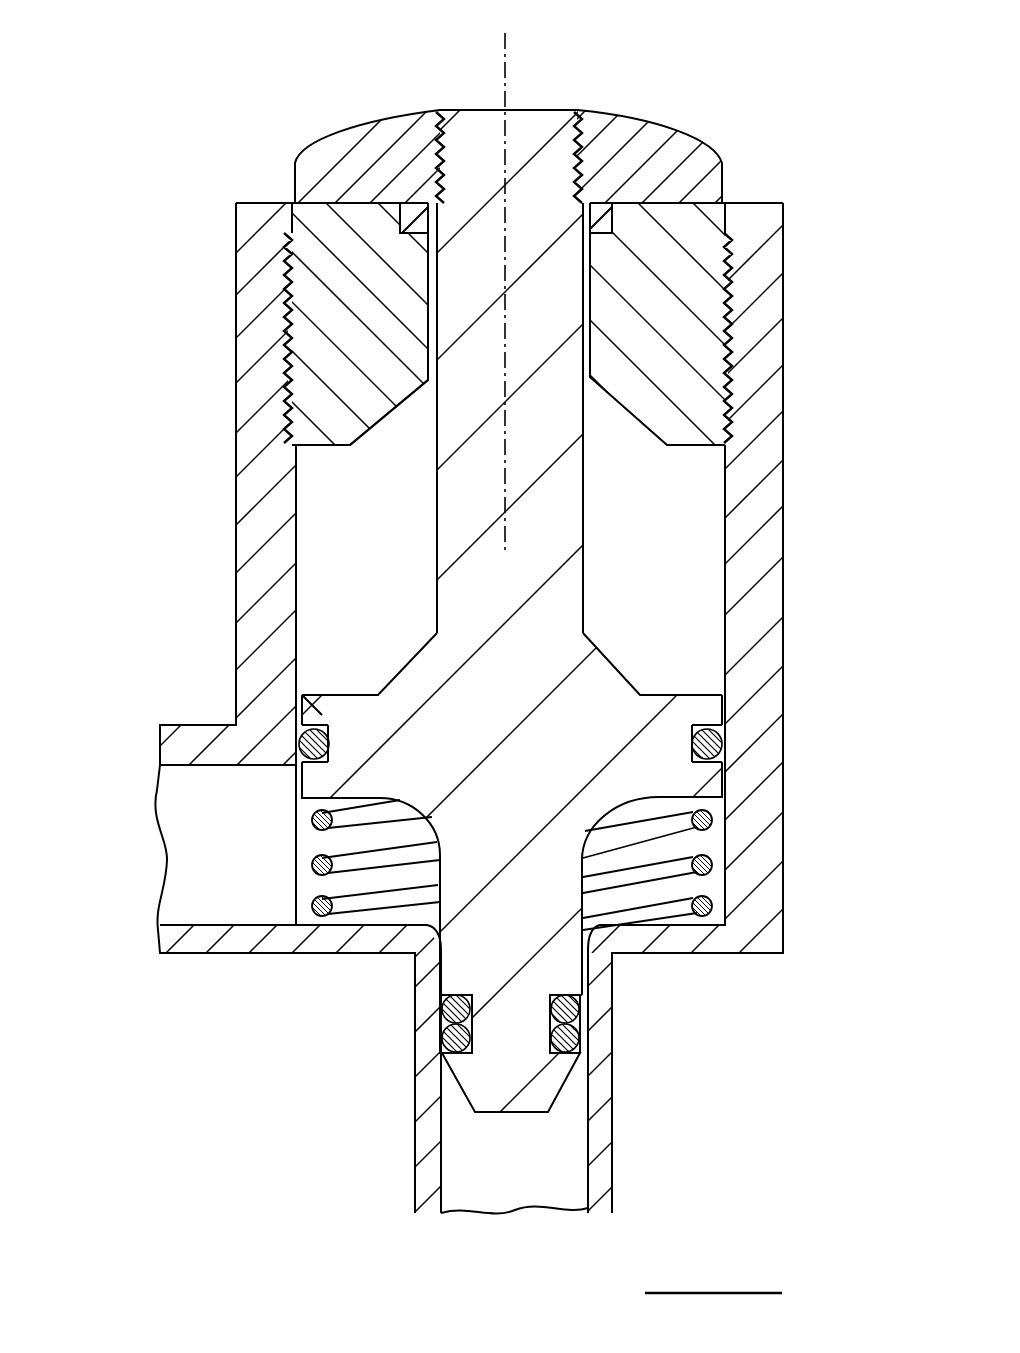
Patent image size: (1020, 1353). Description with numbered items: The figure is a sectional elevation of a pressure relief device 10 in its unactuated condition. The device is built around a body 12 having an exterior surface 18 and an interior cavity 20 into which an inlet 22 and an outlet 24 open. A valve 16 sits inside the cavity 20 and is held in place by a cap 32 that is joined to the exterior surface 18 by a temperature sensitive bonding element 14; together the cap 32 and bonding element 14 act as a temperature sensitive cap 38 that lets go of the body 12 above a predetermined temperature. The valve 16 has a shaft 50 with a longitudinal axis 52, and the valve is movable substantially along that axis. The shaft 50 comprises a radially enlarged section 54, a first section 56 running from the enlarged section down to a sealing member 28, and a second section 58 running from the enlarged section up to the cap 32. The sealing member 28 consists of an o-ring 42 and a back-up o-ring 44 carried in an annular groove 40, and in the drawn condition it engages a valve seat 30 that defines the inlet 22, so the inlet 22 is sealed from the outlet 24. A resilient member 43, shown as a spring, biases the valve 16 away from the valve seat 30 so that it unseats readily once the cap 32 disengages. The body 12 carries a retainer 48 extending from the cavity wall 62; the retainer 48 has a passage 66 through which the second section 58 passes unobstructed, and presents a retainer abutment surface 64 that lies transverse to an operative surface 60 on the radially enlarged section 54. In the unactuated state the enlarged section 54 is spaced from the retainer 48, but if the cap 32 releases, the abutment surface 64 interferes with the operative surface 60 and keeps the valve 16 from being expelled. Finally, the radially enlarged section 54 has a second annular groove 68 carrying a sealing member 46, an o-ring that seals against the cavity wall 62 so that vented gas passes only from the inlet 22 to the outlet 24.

The pressure relief device 10 is at (128, 182).
The body 12 is at (252, 542).
The temperature sensitive bonding element 14 is at (667, 185).
The valve 16 is at (340, 122).
The exterior surface 18 is at (722, 190).
The cavity 20 is at (675, 562).
The inlet 22 is at (533, 1182).
The outlet 24 is at (245, 867).
The sealing member 28 is at (592, 1017).
The valve seat 30 is at (580, 1122).
The cap 32 is at (610, 130).
The temperature sensitive cap 38 is at (279, 122).
The annular groove 40 is at (552, 1028).
The o-ring 42 is at (440, 1042).
The resilient member 43 is at (667, 865).
The back-up o-ring 44 is at (440, 1005).
The sealing member 46 is at (727, 733).
The retainer 48 is at (680, 377).
The shaft 50 is at (595, 487).
The longitudinal axis 52 is at (507, 43).
The radially enlarged section 54 is at (297, 707).
The first section 56 is at (523, 942).
The second section 58 is at (560, 603).
The operative surface 60 is at (393, 665).
The cavity wall 62 is at (293, 497).
The retainer abutment surface 64 is at (388, 412).
The passage 66 is at (575, 318).
The annular groove 68 is at (325, 722).